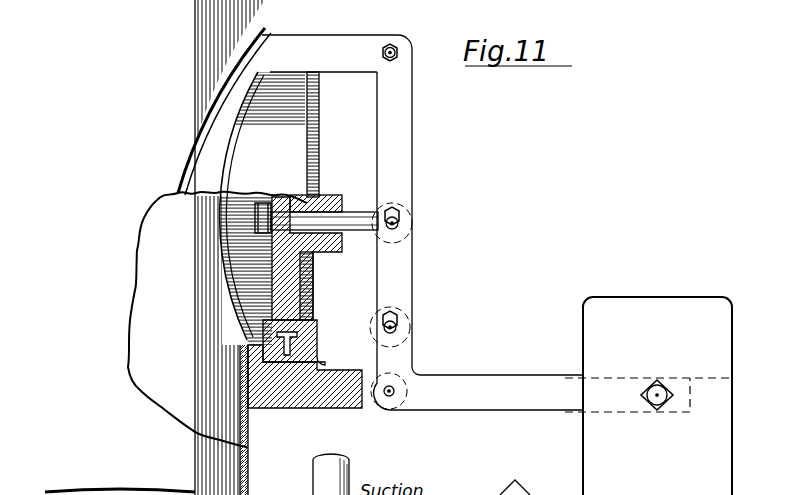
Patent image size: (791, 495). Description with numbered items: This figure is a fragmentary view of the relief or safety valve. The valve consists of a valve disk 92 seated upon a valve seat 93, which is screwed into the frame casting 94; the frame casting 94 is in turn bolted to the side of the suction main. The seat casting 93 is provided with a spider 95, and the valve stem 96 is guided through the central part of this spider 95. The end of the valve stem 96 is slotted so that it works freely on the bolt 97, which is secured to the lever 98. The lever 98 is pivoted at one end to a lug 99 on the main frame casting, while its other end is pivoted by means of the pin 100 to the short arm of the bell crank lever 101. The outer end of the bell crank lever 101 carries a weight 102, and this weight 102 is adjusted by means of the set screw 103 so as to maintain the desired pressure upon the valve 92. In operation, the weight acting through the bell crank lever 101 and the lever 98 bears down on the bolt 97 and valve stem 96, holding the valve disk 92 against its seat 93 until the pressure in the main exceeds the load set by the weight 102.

The valve disk 92 is at (282, 286).
The valve seat 93 is at (313, 341).
The frame casting 94 is at (293, 383).
The spider 95 is at (333, 197).
The valve stem 96 is at (302, 220).
The bolt 97 is at (408, 225).
The lever 98 is at (397, 140).
The lug 99 is at (353, 53).
The pin 100 is at (405, 327).
The bell crank lever 101 is at (425, 386).
The weight 102 is at (607, 313).
The set screw 103 is at (658, 398).